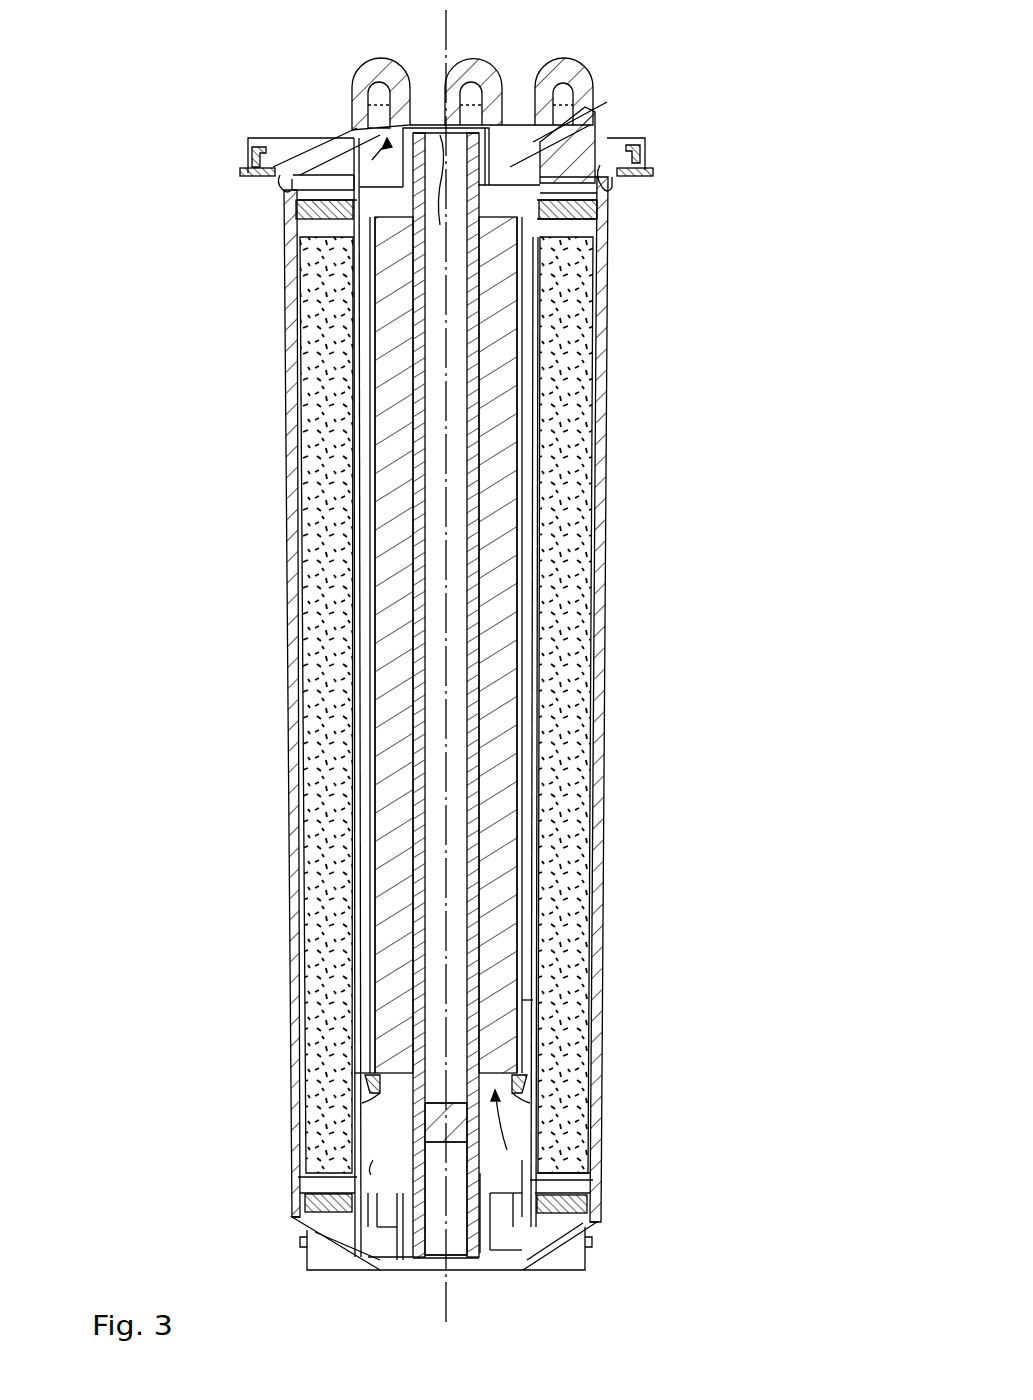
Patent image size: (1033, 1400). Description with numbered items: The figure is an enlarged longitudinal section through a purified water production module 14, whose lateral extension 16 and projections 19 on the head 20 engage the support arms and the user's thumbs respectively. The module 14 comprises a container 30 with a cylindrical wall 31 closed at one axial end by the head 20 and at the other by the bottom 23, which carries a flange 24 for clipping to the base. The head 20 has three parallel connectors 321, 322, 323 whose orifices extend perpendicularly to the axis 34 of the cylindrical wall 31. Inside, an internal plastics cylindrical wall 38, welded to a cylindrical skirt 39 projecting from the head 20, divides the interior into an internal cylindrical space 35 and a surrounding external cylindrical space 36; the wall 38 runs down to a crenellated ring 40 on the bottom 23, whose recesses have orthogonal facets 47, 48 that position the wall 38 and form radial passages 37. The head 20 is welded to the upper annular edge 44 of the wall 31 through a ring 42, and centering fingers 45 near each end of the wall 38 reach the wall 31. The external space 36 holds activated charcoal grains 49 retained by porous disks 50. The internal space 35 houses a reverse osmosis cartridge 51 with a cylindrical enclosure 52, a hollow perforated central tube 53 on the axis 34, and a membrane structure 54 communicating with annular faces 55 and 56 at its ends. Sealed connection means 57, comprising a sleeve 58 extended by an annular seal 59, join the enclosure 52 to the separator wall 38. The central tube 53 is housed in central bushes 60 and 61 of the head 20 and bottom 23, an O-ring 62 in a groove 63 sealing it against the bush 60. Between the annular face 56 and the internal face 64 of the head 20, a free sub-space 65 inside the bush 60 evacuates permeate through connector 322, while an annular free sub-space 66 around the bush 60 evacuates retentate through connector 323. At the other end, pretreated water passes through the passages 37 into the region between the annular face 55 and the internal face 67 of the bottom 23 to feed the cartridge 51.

The purified water production module 14 is at (722, 466).
The lateral extension 16 is at (240, 172).
The projections 19 is at (248, 152).
The head 20 is at (330, 92).
The bottom 23 is at (602, 1280).
The flange 24 is at (583, 1240).
The container 30 is at (235, 620).
The cylindrical wall 31 is at (290, 505).
The connector 321 is at (572, 70).
The connector 322 is at (478, 66).
The connector 323 is at (378, 66).
The axis 34 is at (446, 32).
The internal cylindrical space 35 is at (370, 1149).
The external cylindrical space 36 is at (328, 388).
The radial passages 37 is at (380, 1215).
The internal cylindrical wall 38 is at (360, 658).
The cylindrical skirt 39 is at (600, 170).
The crenellated ring 40 is at (362, 1232).
The ring 42 is at (290, 195).
The upper annular edge 44 is at (606, 148).
The centering fingers 45 is at (320, 250).
The facet 47 is at (596, 1226).
The facet 48 is at (592, 1193).
The grains 49 is at (572, 405).
The porous disk 50 is at (290, 212).
The reverse osmosis cartridge 51 is at (375, 1100).
The cylindrical enclosure 52 is at (520, 680).
The central tube 53 is at (478, 806).
The reverse osmosis treatment membrane structure 54 is at (500, 576).
The annular face 55 is at (505, 1134).
The annular face 56 is at (566, 237).
The sealed connection means 57 is at (535, 1068).
The sleeve 58 is at (520, 1008).
The annular seal 59 is at (533, 1103).
The central bush 60 is at (400, 172).
The central bush 61 is at (480, 1258).
The O-ring 62 is at (446, 195).
The groove 63 is at (505, 122).
The internal face 64 is at (385, 150).
The free sub-space 65 is at (446, 118).
The annular free sub-space 66 is at (516, 158).
The internal face 67 is at (378, 1262).